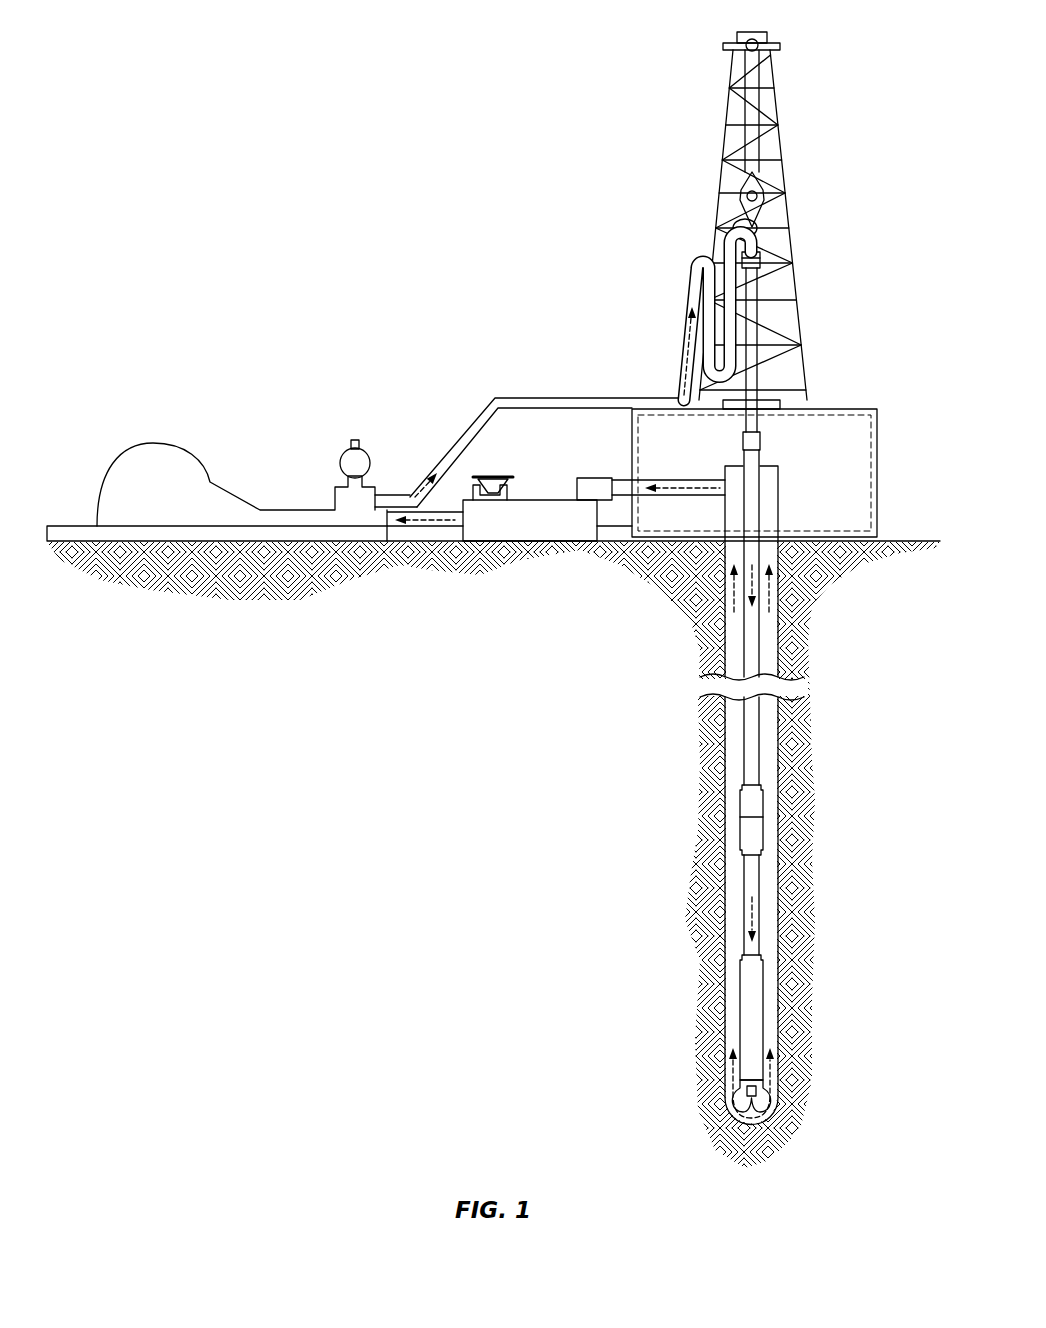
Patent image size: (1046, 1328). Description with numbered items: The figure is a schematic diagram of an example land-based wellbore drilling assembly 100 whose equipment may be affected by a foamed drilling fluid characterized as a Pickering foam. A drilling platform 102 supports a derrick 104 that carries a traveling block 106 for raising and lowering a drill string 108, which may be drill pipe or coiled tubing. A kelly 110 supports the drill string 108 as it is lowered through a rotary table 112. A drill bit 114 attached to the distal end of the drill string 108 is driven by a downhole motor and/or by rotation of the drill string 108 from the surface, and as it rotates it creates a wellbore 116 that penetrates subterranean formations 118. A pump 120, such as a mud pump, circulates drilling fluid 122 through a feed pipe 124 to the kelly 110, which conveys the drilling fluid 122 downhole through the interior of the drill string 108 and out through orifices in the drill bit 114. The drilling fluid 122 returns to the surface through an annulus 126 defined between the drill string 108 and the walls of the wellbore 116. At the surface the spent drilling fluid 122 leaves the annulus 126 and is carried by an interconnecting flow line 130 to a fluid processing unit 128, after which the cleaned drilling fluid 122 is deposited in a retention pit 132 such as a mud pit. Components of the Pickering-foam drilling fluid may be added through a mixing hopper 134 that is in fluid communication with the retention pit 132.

The drilling assembly 100 is at (363, 134).
The drilling platform 102 is at (878, 424).
The derrick 104 is at (781, 142).
The traveling block 106 is at (766, 186).
The drill string 108 is at (762, 637).
The kelly 110 is at (757, 308).
The rotary table 112 is at (782, 404).
The drill bit 114 is at (766, 1106).
The wellbore 116 is at (780, 752).
The subterranean formations 118 is at (693, 904).
The pump 120 is at (173, 503).
The drilling fluid 122 is at (407, 496).
The feed pipe 124 is at (514, 403).
The annulus 126 is at (770, 897).
The fluid processing unit 128 is at (596, 486).
The flow line 130 is at (688, 497).
The retention pit 132 is at (580, 542).
The mixing hopper 134 is at (493, 478).